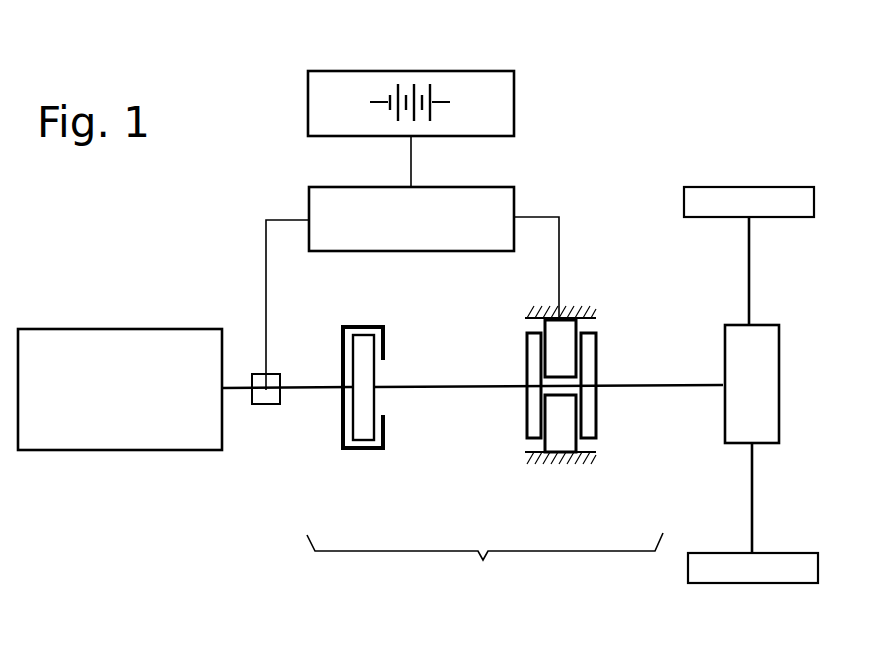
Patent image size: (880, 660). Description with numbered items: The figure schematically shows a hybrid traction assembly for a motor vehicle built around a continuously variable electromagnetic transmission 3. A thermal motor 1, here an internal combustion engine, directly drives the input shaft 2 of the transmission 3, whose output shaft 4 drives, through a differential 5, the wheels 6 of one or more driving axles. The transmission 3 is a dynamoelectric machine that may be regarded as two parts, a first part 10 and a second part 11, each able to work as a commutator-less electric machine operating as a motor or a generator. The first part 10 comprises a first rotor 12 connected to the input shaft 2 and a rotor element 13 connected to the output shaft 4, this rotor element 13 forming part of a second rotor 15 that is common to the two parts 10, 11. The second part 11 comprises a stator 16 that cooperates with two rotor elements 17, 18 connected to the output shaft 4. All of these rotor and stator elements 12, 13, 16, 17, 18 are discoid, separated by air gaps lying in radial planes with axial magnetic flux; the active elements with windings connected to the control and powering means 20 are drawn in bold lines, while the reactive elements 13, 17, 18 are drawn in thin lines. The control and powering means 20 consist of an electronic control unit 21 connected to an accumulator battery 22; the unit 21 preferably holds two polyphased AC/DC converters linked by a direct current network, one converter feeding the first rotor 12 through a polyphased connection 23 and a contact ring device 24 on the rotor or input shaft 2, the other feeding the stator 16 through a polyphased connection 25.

The thermal motor 1 is at (62, 348).
The input shaft 2 is at (305, 395).
The continuously variable electromagnetic transmission 3 is at (485, 565).
The output shaft 4 is at (430, 390).
The differential 5 is at (765, 358).
The wheels 6 is at (790, 198).
The first part 10 is at (388, 410).
The second part 11 is at (556, 409).
The first rotor 12 is at (358, 326).
The rotor element 13 is at (368, 345).
The second rotor 15 is at (556, 370).
The stator 16 is at (568, 360).
The rotor element 17 is at (533, 411).
The rotor element 18 is at (590, 412).
The control and powering means 20 is at (293, 142).
The electronic control unit 21 is at (483, 205).
The accumulator battery 22 is at (483, 80).
The polyphased connection 23 is at (265, 258).
The contact ring device 24 is at (266, 406).
The polyphased connection 25 is at (559, 253).